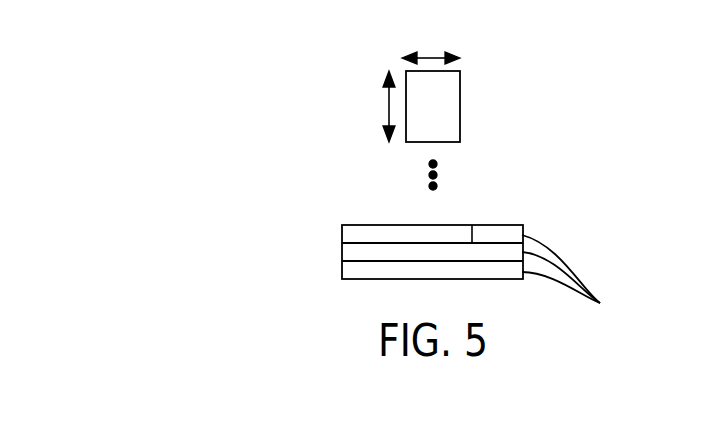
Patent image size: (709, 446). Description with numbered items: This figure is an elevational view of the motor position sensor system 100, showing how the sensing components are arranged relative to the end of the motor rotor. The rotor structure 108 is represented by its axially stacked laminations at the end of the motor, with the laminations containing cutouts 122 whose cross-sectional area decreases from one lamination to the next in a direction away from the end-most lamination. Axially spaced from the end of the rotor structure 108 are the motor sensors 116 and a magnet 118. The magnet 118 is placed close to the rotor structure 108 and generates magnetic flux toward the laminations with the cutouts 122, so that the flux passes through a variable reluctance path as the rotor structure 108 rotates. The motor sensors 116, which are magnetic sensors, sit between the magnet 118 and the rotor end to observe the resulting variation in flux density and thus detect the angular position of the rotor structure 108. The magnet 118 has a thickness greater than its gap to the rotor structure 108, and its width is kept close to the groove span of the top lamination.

The motor position sensor system 100 is at (309, 174).
The rotor structure 108 is at (309, 261).
The motor sensors 116 is at (460, 163).
The magnets 118 is at (480, 108).
The cutouts 122 is at (578, 277).